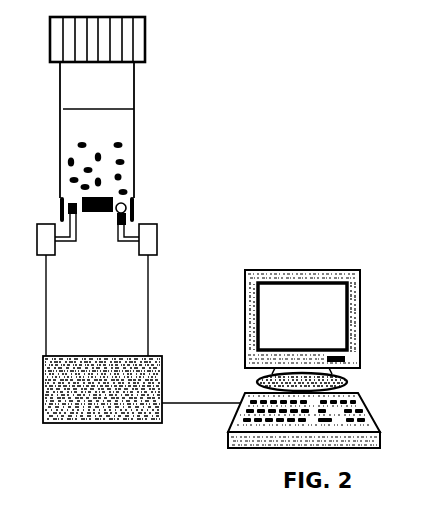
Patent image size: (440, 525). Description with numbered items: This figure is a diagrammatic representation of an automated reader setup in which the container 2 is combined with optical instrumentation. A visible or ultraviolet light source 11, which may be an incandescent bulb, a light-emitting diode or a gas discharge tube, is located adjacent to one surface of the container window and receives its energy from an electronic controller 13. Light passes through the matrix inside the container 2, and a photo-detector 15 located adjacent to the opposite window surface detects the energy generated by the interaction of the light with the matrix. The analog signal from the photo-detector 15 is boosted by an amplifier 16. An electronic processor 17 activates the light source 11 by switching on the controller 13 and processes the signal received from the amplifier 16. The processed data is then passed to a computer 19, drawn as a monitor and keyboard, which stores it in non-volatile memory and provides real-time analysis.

The container 2 is at (60, 92).
The light source 11 is at (128, 216).
The electronic controller 13 is at (158, 237).
The photo-detector 15 is at (63, 202).
The amplifier 16 is at (37, 236).
The electronic processor 17 is at (43, 393).
The computer 19 is at (360, 393).